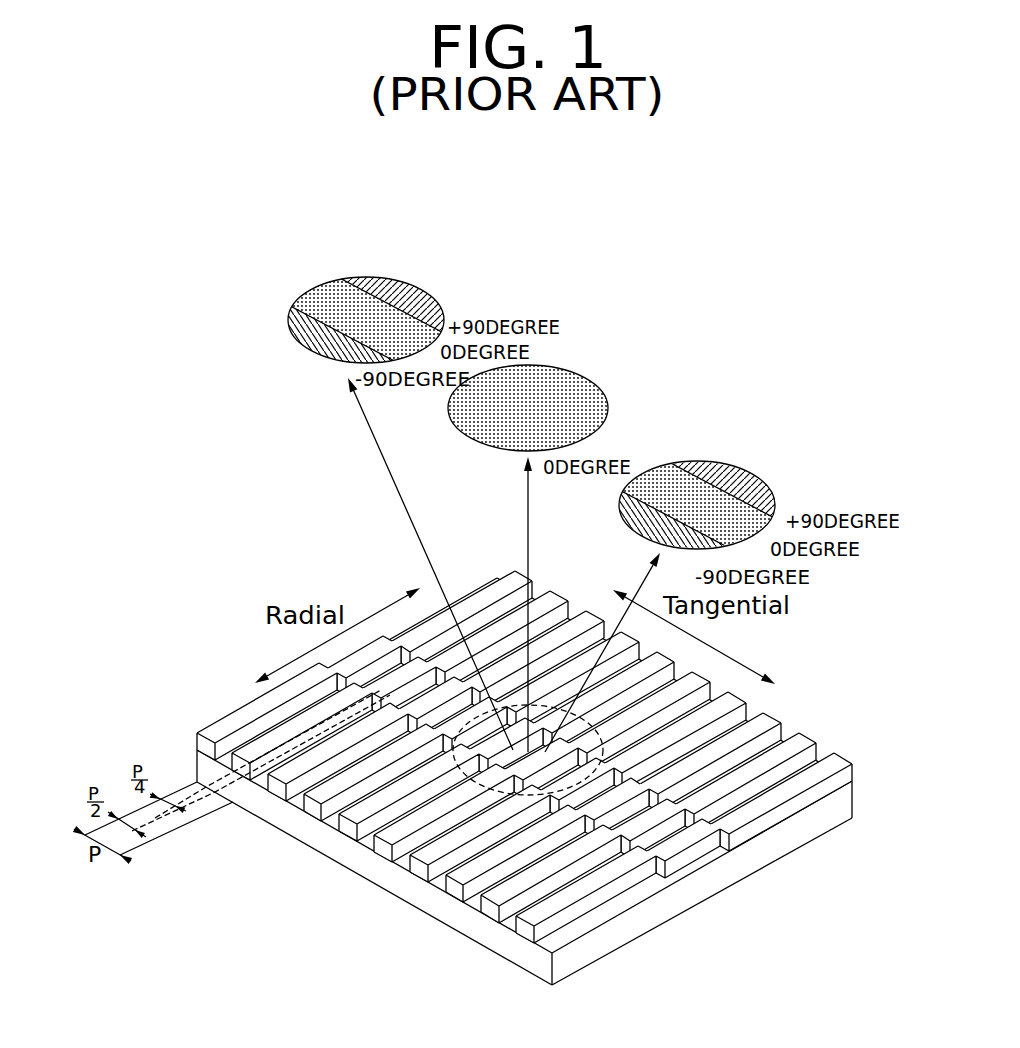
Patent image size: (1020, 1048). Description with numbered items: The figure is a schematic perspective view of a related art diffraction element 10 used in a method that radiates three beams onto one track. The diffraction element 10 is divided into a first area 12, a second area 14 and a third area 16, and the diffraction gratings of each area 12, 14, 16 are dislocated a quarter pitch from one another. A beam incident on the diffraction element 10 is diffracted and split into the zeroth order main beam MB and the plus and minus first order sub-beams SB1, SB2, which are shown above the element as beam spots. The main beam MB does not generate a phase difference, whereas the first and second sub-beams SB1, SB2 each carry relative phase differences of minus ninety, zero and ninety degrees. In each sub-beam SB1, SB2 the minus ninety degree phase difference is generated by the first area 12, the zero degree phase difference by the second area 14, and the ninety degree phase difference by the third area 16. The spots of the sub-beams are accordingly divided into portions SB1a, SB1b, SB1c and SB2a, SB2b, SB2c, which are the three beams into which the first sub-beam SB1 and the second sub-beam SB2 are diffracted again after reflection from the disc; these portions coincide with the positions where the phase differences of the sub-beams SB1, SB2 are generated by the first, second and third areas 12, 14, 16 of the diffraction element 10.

The diffraction element 10 is at (837, 857).
The first area 12 is at (637, 914).
The second area 14 is at (730, 855).
The third area 16 is at (727, 857).
The main beam MB is at (585, 367).
The first sub-beam SB1 is at (457, 230).
The beam diffracted from first sub-beam SB1a is at (365, 308).
The beam diffracted from first sub-beam SB1b is at (292, 307).
The beam diffracted from first sub-beam SB1c is at (415, 295).
The second sub-beam SB2 is at (818, 420).
The beam diffracted from second sub-beam SB2a is at (702, 490).
The beam diffracted from second sub-beam SB2b is at (630, 491).
The beam diffracted from second sub-beam SB2c is at (752, 480).